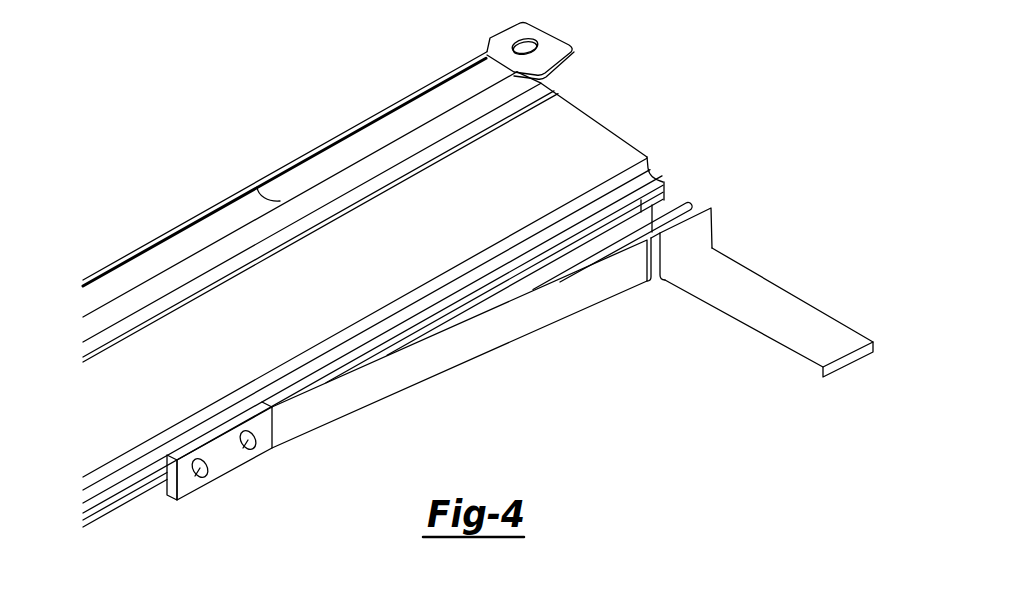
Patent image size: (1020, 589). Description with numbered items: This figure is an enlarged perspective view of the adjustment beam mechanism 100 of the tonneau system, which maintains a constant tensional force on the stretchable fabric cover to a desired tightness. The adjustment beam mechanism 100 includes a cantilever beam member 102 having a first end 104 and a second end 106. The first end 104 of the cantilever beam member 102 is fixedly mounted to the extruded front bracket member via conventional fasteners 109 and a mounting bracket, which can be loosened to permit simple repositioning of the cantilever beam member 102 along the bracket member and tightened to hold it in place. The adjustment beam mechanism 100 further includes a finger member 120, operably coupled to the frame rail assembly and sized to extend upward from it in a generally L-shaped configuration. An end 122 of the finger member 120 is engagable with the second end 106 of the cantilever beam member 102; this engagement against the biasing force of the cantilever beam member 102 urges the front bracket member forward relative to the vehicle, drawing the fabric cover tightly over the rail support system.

The adjustment beam mechanism 100 is at (621, 352).
The cantilever beam member 102 is at (502, 345).
The first end 104 is at (258, 457).
The second end 106 is at (683, 204).
The conventional fasteners 109 is at (250, 447).
The finger member 120 is at (775, 282).
The end 122 is at (703, 224).